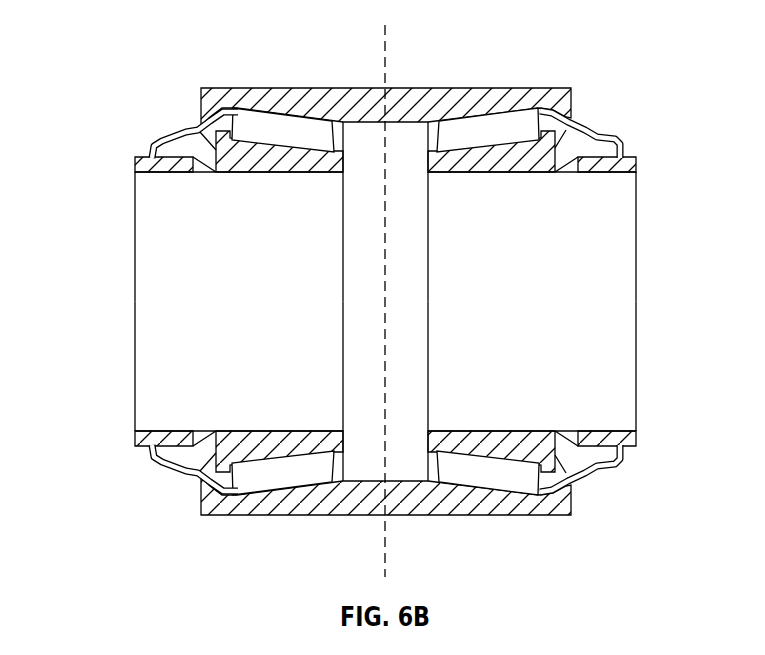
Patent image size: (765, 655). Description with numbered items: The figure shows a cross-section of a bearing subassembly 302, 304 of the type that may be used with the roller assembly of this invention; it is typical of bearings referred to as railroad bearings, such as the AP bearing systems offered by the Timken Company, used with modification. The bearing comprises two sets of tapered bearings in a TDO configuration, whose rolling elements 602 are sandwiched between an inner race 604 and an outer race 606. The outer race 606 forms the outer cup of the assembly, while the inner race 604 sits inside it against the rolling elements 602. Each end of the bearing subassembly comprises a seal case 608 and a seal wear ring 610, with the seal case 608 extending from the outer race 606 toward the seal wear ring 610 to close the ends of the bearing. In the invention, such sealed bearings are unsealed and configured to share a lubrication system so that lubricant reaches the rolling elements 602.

The bearing subassembly 302 is at (385, 293).
The bearing subassembly 304 is at (186, 30).
The rolling elements 602 is at (275, 127).
The inner race 604 is at (513, 448).
The outer race 606 is at (420, 100).
The seal case 608 is at (600, 147).
The seal wear ring 610 is at (627, 167).